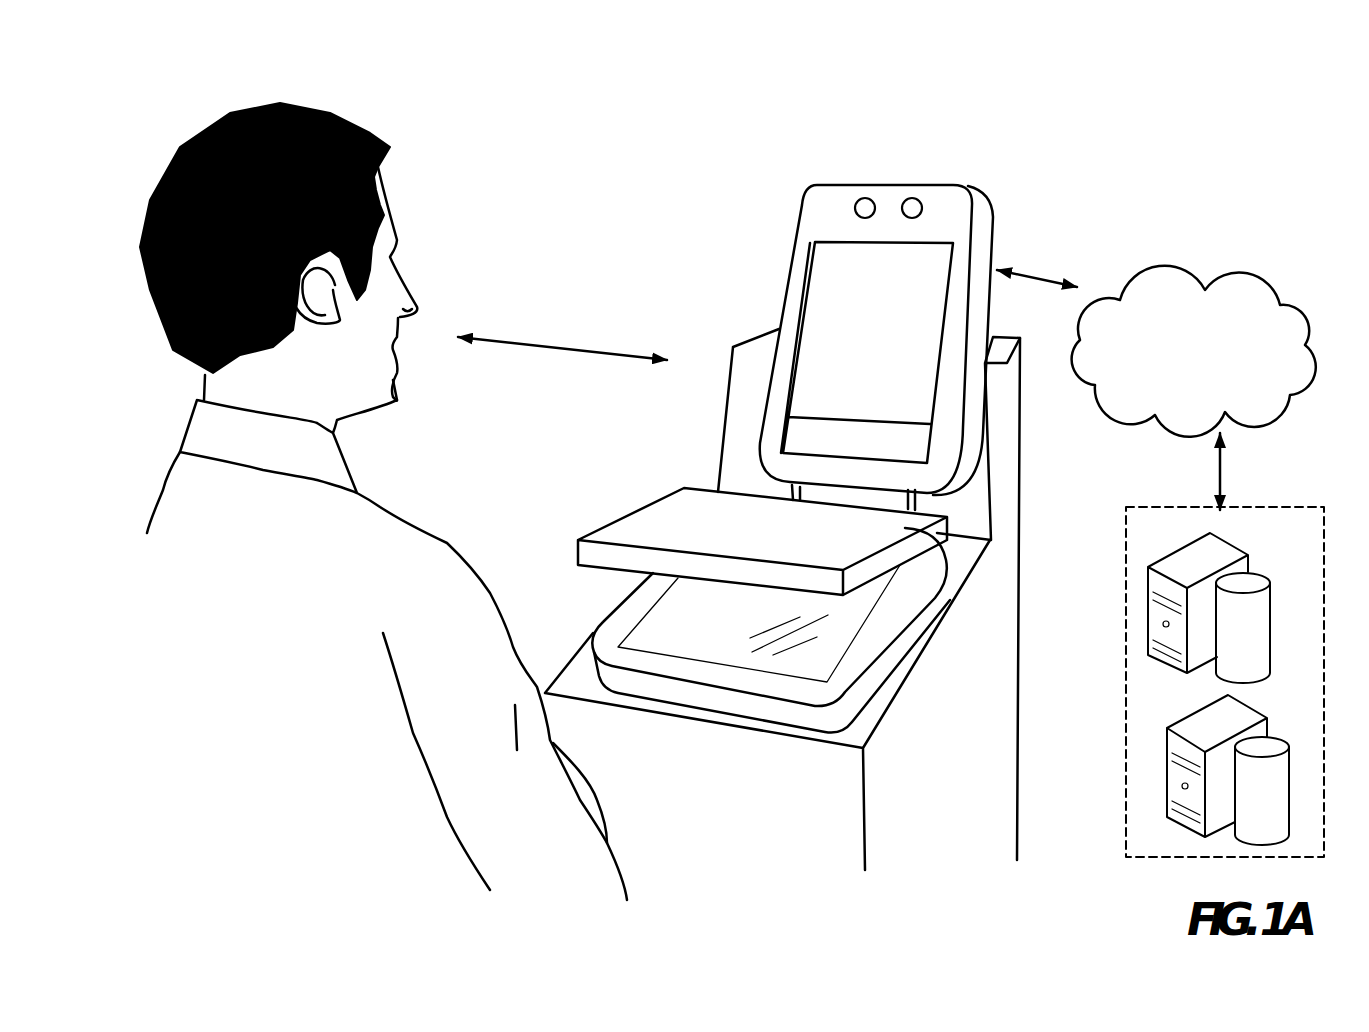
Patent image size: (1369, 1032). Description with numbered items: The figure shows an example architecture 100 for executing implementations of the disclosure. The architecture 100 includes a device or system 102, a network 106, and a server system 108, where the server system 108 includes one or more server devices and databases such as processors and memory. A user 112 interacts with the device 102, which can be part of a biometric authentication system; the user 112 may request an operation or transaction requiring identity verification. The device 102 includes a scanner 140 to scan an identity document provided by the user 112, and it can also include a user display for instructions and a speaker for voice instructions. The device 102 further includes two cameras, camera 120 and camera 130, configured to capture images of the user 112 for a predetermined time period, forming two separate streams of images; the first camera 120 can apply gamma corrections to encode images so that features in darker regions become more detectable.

The architecture 100 is at (618, 97).
The device 102 is at (750, 307).
The network 106 is at (1250, 253).
The server system 108 is at (1123, 683).
The user 112 is at (393, 160).
The camera 120 is at (853, 203).
The camera 130 is at (950, 80).
The scanner 140 is at (692, 529).